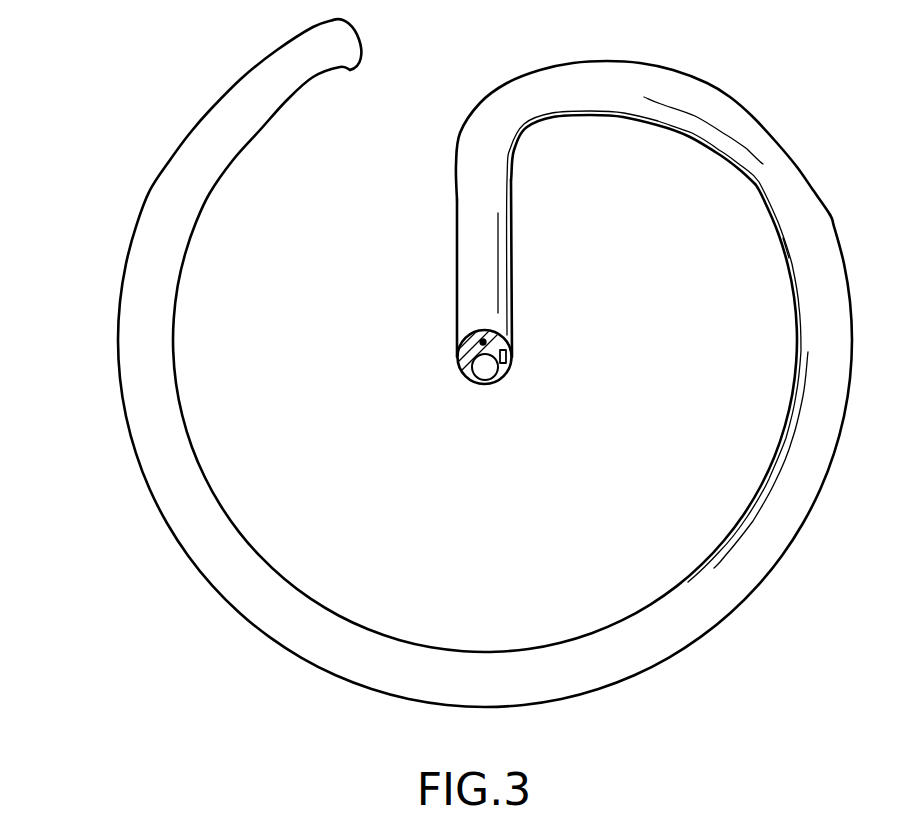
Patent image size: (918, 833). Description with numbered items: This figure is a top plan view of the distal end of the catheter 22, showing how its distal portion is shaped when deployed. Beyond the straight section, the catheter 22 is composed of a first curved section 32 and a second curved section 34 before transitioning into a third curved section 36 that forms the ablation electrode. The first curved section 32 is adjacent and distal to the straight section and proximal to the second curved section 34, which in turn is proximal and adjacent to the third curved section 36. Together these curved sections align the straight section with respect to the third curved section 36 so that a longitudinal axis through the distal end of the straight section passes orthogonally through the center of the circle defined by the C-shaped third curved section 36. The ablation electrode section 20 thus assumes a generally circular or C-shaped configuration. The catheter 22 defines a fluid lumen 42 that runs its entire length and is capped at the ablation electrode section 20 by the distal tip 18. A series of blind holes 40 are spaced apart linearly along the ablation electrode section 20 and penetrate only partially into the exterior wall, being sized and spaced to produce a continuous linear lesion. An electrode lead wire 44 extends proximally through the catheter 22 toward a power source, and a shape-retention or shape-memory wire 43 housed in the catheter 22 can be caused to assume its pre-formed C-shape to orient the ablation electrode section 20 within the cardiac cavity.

The distal tip 18 is at (365, 37).
The ablation electrode section 20 is at (533, 541).
The catheter 22 is at (792, 297).
The first curved section 32 is at (463, 290).
The second curved section 34 is at (467, 153).
The third curved section 36 is at (727, 138).
The blind holes 40 is at (108, 413).
The fluid lumen 42 is at (488, 367).
The shape-memory wire 43 is at (506, 357).
The electrode lead wire 44 is at (485, 341).